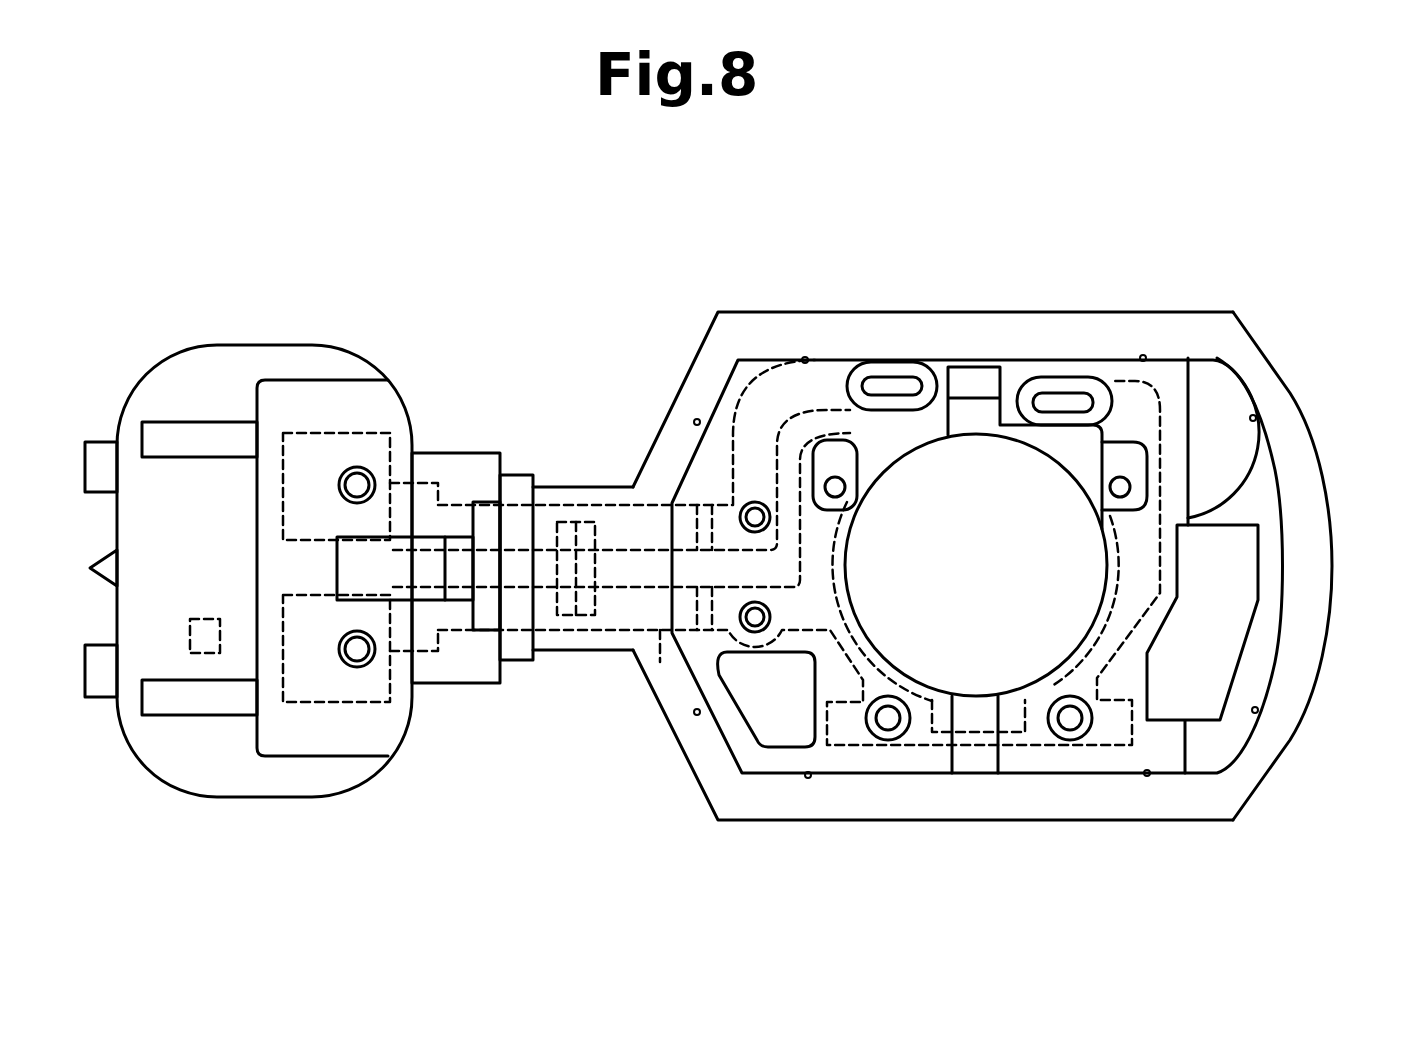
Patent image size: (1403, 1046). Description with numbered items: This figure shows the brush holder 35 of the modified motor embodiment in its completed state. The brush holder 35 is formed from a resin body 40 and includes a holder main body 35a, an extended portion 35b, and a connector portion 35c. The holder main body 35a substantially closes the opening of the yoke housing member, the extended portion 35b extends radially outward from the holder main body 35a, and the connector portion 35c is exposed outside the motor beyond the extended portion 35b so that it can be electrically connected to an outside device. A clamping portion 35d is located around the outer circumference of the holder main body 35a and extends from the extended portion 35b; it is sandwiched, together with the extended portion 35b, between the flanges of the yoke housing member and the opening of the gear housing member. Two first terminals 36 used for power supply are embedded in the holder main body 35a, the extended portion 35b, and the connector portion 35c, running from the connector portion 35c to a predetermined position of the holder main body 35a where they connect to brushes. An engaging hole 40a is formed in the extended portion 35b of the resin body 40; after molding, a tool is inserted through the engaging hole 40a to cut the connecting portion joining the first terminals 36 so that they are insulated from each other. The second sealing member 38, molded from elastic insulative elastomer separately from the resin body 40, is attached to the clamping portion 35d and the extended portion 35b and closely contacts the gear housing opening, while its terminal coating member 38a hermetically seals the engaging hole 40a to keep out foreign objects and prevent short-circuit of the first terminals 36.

The brush holder 35 is at (1202, 208).
The holder main body 35a is at (1168, 375).
The extended portion 35b is at (592, 487).
The connector portion 35c is at (260, 345).
The clamping portion 35d is at (1292, 396).
The first terminals 36 is at (653, 503).
The second sealing member 38 is at (940, 326).
The terminal coating member 38a is at (563, 650).
The resin body 40 is at (1226, 372).
The engaging hole 40a is at (570, 520).